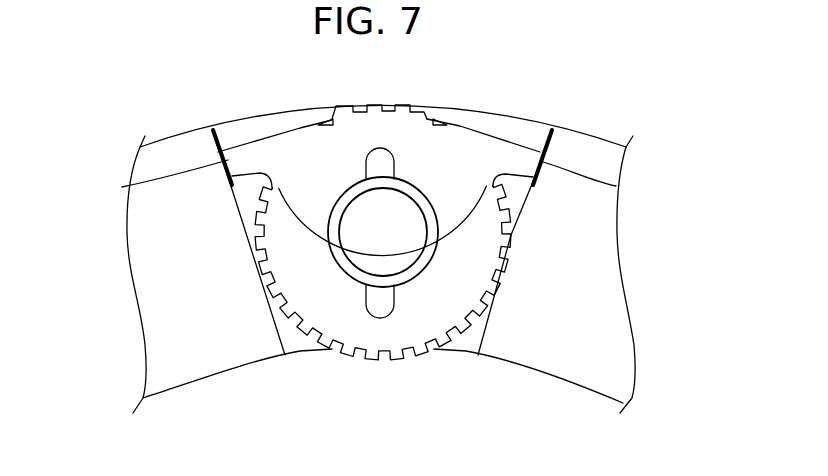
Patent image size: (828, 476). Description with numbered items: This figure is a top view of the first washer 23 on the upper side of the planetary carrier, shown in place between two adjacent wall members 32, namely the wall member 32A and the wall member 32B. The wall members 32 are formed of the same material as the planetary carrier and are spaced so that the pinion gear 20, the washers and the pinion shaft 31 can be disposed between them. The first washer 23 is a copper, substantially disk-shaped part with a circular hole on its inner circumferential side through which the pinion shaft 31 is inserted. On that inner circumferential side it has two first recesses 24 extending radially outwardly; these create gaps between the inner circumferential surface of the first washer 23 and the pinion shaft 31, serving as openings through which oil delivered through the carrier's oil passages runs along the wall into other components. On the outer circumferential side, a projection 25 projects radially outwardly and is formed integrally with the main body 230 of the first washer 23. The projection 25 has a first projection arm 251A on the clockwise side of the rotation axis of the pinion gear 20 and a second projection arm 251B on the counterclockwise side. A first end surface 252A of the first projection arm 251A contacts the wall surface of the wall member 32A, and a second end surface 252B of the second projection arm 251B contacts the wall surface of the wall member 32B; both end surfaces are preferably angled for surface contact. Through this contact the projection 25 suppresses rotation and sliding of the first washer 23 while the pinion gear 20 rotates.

The pinion gear 20 is at (385, 360).
The first washer 23 is at (433, 303).
The first recess 24 is at (390, 304).
The projection 25 is at (394, 203).
The first projection arm 251A is at (512, 160).
The second projection arm 251B is at (253, 158).
The first end surface 252A is at (616, 186).
The second end surface 252B is at (124, 187).
The main body 230 is at (347, 148).
The pinion shaft 31 is at (346, 272).
The wall member 32 is at (388, 135).
The wall member 32A is at (588, 150).
The wall member 32B is at (174, 150).